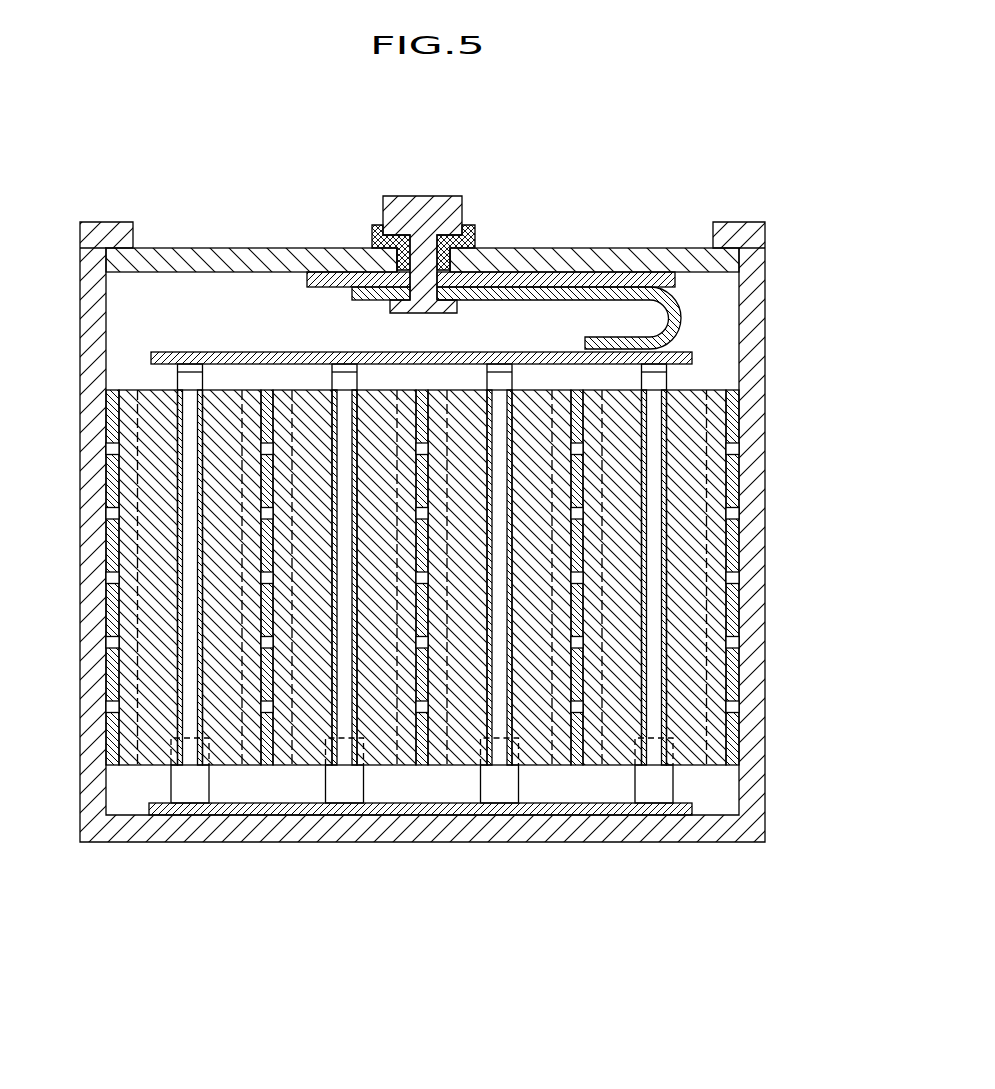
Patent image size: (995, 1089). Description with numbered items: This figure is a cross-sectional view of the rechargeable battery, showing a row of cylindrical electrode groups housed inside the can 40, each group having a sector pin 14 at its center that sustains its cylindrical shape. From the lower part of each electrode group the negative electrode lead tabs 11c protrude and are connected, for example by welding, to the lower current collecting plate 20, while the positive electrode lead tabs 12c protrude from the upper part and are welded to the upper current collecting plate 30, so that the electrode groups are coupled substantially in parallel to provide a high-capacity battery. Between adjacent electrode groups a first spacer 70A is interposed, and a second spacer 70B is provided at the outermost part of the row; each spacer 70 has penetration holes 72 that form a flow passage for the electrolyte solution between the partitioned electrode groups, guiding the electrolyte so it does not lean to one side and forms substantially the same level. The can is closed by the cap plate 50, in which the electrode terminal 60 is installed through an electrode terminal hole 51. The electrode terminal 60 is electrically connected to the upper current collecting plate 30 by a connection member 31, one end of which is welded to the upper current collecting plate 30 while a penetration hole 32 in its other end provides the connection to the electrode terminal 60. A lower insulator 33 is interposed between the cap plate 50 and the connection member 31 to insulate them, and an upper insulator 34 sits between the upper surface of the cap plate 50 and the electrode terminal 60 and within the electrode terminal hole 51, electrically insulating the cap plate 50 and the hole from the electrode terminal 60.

The negative electrode lead tab 11c is at (655, 790).
The positive electrode lead tab 12c is at (657, 378).
The sector pin 14 is at (655, 482).
The lower current collecting plate 20 is at (593, 808).
The upper current collecting plate 30 is at (690, 357).
The connection member 31 is at (678, 301).
The penetration hole 32 is at (415, 296).
The lower insulator 33 is at (542, 278).
The upper insulator 34 is at (470, 226).
The can 40 is at (752, 327).
The cap plate 50 is at (633, 262).
The electrode terminal hole 51 is at (416, 250).
The electrode terminal 60 is at (434, 205).
The spacer 70 is at (422, 681).
The first spacer 70A is at (265, 770).
The second spacer 70B is at (112, 770).
The penetration hole 72 is at (108, 635).